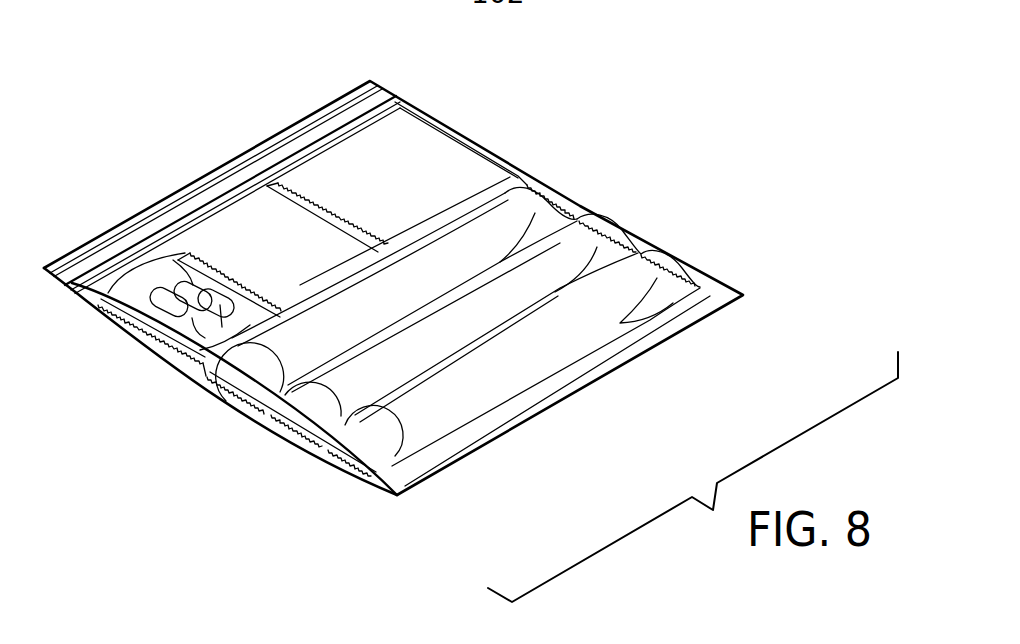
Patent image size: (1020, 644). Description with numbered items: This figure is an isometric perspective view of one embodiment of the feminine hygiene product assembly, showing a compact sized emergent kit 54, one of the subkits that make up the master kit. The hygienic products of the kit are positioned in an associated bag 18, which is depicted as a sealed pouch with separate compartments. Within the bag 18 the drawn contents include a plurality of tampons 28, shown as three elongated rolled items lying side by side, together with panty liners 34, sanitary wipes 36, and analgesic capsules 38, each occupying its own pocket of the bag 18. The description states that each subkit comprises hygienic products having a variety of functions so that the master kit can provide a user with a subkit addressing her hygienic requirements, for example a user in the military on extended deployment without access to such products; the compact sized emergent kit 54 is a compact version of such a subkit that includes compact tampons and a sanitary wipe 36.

The compact sized emergent kit 54 is at (690, 192).
The bag 18 is at (545, 176).
The panty liners 34 is at (360, 163).
The sanitary wipes 36 is at (243, 243).
The analgesic capsules 38 is at (155, 290).
The tampons 28 is at (332, 465).